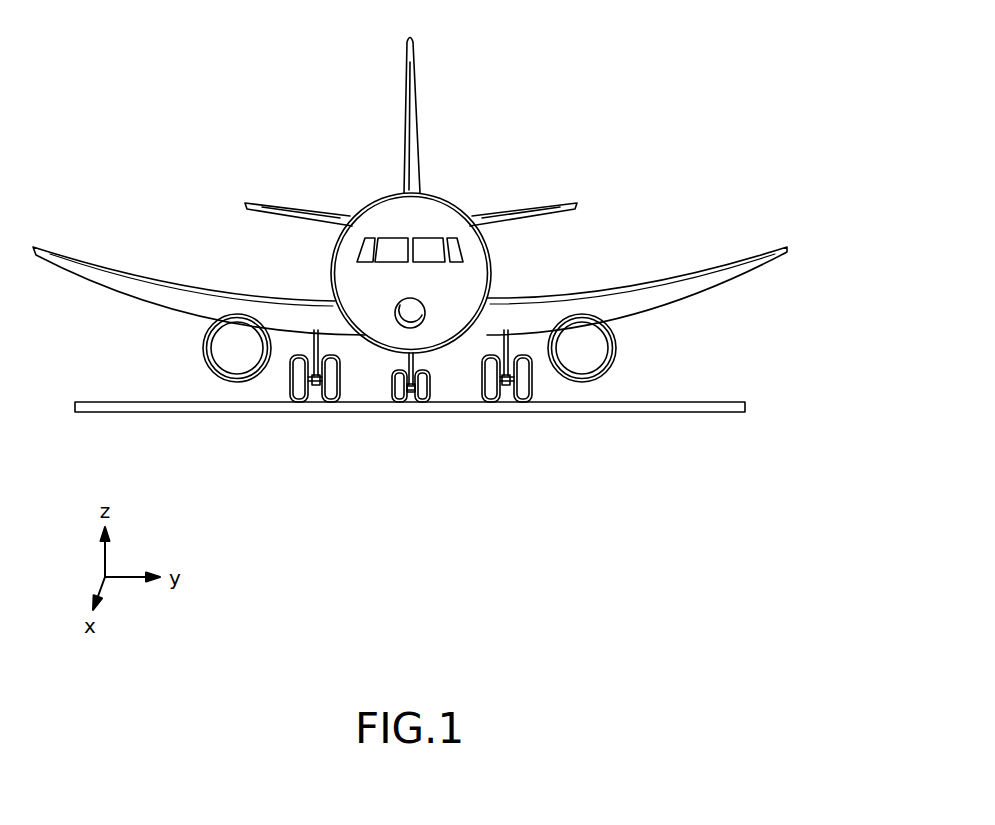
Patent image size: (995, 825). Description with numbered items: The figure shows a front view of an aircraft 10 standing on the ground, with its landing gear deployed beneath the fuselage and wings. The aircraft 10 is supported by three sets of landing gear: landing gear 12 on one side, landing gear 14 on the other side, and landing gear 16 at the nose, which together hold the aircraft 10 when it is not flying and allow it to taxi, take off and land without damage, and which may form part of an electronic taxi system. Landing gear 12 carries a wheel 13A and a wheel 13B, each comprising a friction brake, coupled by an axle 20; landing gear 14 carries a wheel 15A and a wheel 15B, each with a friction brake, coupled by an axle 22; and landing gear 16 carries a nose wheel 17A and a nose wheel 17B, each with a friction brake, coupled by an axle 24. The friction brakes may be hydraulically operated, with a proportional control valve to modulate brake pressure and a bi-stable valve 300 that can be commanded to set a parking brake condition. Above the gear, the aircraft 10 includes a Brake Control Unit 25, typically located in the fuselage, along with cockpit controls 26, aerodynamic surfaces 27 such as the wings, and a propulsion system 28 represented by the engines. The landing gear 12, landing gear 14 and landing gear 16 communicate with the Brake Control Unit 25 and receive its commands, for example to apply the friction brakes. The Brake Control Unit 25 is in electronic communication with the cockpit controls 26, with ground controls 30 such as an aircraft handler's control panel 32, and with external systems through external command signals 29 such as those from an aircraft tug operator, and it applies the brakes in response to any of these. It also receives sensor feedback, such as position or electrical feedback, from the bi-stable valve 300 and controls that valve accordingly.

The aircraft 10 is at (278, 120).
The landing gear 12 is at (548, 387).
The wheel 13A is at (533, 388).
The wheel 13B is at (497, 360).
The landing gear 14 is at (276, 387).
The wheel 15A is at (300, 403).
The wheel 15B is at (332, 403).
The landing gear 16 is at (444, 356).
The nose wheel 17A is at (430, 388).
The nose wheel 17B is at (395, 403).
The axle 20 is at (505, 403).
The axle 22 is at (316, 403).
The axle 24 is at (410, 403).
The brake control unit 25 is at (380, 312).
The cockpit controls 26 is at (370, 252).
The aerodynamic surfaces 27 is at (650, 292).
The propulsion system 28 is at (617, 346).
The external command signals 29 is at (536, 182).
The ground controls 30 is at (407, 342).
The aircraft handler's control panel 32 is at (410, 362).
The bi-stable valve 300 is at (615, 202).